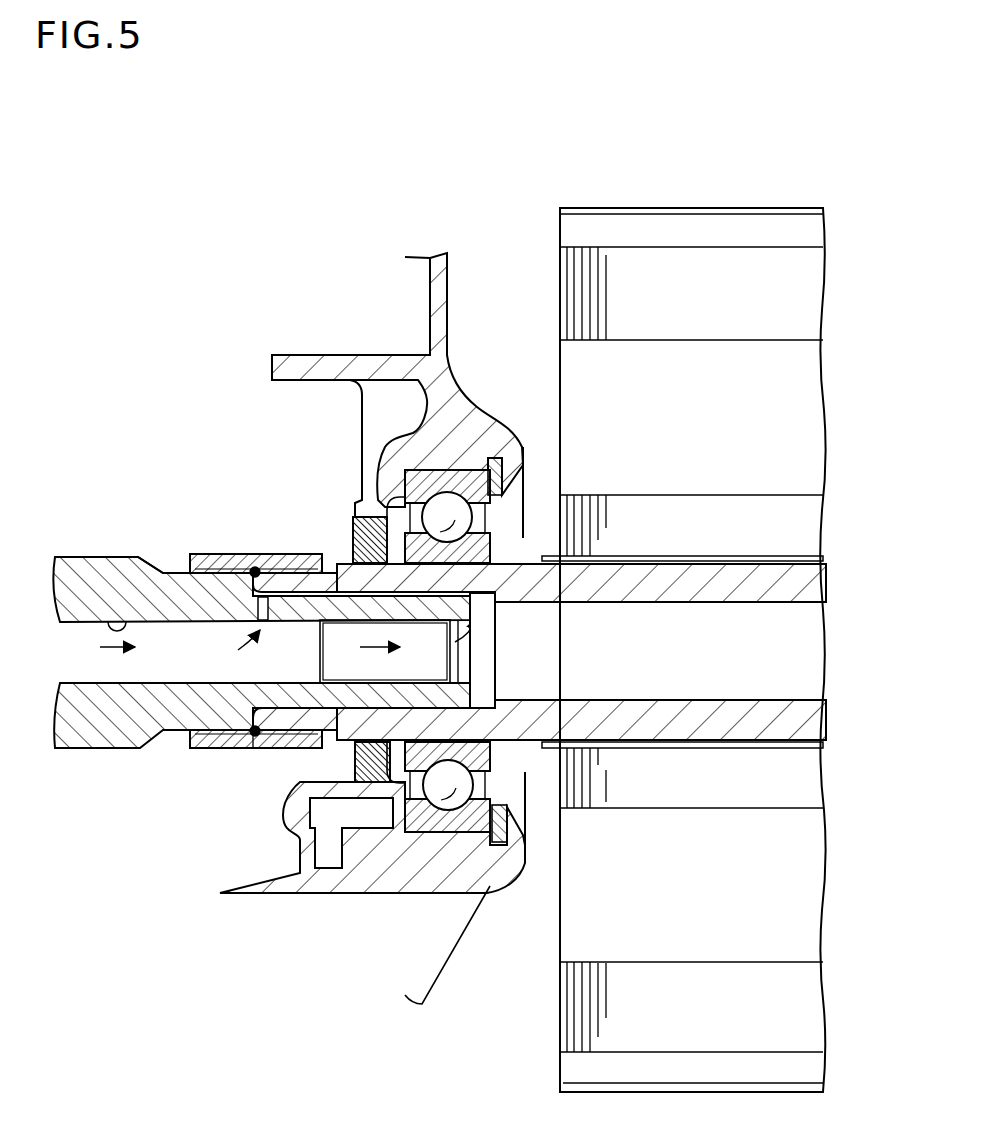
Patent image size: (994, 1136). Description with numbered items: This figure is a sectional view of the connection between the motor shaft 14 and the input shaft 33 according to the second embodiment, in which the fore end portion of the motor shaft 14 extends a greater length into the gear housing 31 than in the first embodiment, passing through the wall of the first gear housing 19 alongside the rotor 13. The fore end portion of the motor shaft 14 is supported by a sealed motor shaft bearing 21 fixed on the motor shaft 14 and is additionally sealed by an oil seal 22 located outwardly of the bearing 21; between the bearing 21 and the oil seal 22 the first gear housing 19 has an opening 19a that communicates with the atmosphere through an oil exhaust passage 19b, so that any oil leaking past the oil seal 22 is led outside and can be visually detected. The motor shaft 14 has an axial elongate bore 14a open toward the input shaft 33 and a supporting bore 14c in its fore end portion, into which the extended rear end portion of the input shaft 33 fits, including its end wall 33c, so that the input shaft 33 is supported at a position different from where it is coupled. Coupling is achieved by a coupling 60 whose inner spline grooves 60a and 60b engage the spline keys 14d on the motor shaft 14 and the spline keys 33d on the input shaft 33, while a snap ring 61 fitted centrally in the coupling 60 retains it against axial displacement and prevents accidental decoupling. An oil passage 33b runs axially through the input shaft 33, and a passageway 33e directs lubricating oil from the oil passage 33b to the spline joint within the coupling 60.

The rotor 13 is at (705, 228).
The motor shaft 14 is at (542, 656).
The axial elongate bore 14a is at (725, 605).
The supporting bore 14c is at (490, 704).
The spline keys 14d is at (262, 748).
The first gear housing 19 is at (372, 628).
The opening 19a is at (398, 785).
The oil exhaust passage 19b is at (334, 845).
The sealed motor shaft bearing 21 is at (432, 486).
The oil seal 22 is at (352, 543).
The gear housing 31 is at (279, 352).
The input shaft 33 is at (314, 661).
The oil passage 33b is at (123, 582).
The end wall of shaft 33c is at (485, 680).
The spline keys 33d is at (208, 750).
The passageway 33e is at (263, 624).
The coupling 60 is at (217, 551).
The spline grooves 60a is at (256, 787).
The spline grooves 60b is at (189, 806).
The snap ring 61 is at (255, 568).